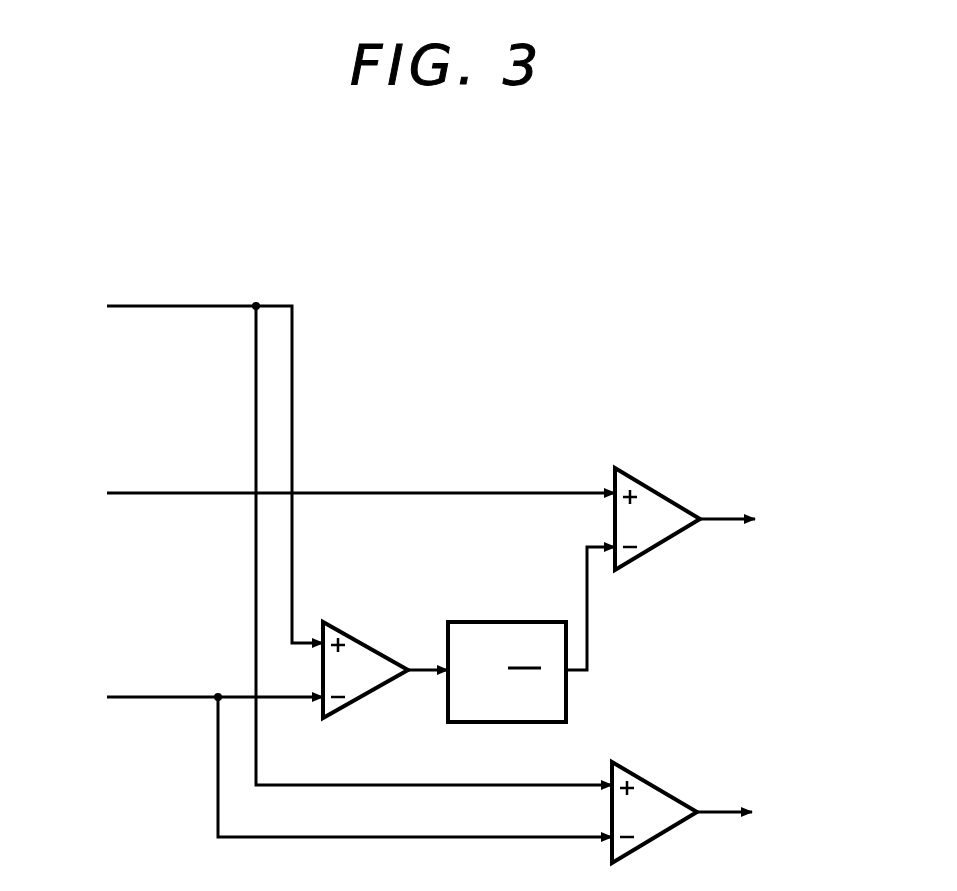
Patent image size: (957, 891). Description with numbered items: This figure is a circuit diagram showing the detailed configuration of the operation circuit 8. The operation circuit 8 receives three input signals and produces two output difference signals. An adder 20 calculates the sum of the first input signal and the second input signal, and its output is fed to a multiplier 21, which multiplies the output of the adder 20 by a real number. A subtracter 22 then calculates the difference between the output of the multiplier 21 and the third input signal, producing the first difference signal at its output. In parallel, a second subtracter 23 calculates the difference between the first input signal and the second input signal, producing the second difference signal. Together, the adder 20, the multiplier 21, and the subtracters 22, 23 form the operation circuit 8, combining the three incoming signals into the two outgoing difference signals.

The operation circuit 8 is at (140, 190).
The adder 20 is at (367, 645).
The multiplier 21 is at (504, 622).
The subtracter 22 is at (664, 495).
The subtracter 23 is at (659, 788).